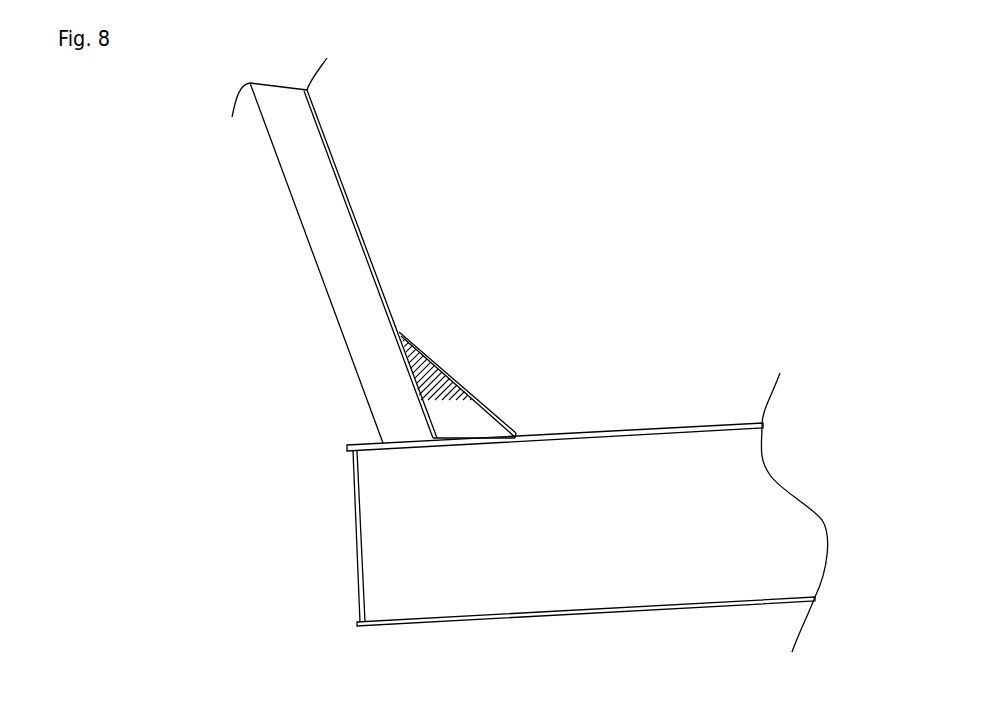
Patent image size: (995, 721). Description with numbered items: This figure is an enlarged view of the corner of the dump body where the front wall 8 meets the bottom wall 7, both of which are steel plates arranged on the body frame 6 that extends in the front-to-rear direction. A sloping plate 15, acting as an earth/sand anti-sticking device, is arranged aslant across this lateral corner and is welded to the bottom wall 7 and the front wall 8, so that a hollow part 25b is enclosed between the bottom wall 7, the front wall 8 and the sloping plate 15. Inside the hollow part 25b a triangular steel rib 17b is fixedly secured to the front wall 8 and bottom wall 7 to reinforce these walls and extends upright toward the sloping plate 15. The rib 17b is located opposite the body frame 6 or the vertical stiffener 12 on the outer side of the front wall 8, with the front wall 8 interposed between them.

The body frame 6 is at (610, 585).
The bottom wall 7 is at (628, 428).
The front wall 8 is at (355, 232).
The stiffener 12 is at (292, 202).
The sloping plate 15 is at (458, 378).
The rib 17b is at (477, 425).
The hollow part 25b is at (427, 392).